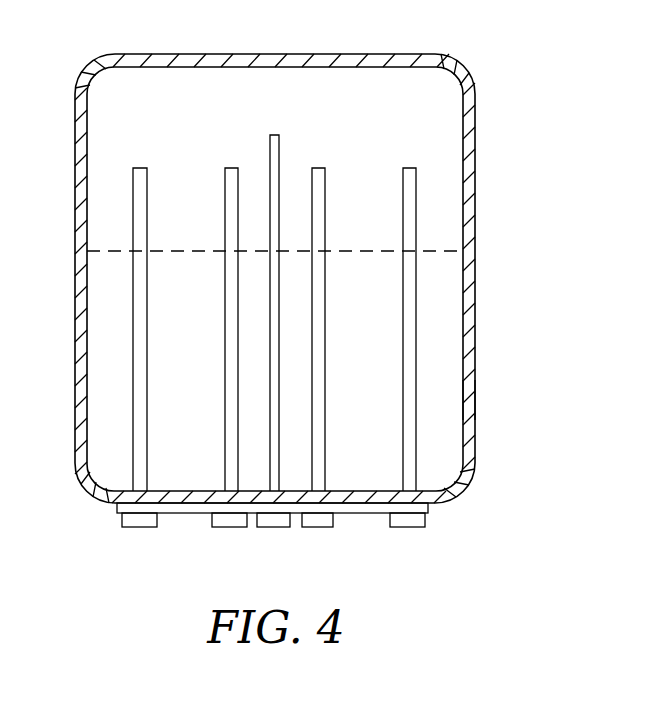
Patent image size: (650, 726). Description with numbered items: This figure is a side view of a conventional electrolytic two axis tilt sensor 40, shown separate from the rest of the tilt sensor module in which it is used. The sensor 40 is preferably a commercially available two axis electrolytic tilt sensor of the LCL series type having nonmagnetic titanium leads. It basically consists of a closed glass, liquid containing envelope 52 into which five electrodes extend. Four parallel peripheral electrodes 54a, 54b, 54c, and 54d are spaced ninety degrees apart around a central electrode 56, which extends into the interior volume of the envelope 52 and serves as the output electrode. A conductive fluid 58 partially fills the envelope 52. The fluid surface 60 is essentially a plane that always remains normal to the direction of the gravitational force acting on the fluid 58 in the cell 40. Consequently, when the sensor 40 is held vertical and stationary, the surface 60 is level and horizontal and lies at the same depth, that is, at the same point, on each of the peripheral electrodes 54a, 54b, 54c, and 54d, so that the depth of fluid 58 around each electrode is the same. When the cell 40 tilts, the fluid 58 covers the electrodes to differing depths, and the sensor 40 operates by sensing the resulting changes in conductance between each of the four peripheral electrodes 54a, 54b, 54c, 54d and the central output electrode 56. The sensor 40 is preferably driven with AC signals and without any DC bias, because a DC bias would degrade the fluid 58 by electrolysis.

The two axis tilt sensor 40 is at (513, 279).
The envelope 52 is at (143, 54).
The peripheral electrode 54a is at (140, 166).
The peripheral electrode 54b is at (410, 166).
The peripheral electrode 54c is at (233, 166).
The peripheral electrode 54d is at (321, 166).
The central electrode 56 is at (276, 133).
The conductive fluid 58 is at (450, 400).
The fluid surface 60 is at (110, 250).